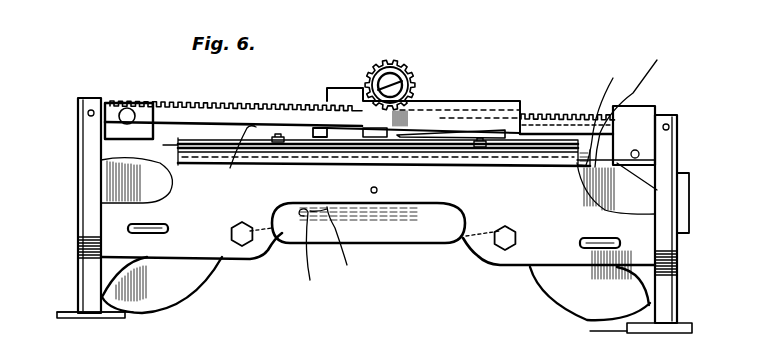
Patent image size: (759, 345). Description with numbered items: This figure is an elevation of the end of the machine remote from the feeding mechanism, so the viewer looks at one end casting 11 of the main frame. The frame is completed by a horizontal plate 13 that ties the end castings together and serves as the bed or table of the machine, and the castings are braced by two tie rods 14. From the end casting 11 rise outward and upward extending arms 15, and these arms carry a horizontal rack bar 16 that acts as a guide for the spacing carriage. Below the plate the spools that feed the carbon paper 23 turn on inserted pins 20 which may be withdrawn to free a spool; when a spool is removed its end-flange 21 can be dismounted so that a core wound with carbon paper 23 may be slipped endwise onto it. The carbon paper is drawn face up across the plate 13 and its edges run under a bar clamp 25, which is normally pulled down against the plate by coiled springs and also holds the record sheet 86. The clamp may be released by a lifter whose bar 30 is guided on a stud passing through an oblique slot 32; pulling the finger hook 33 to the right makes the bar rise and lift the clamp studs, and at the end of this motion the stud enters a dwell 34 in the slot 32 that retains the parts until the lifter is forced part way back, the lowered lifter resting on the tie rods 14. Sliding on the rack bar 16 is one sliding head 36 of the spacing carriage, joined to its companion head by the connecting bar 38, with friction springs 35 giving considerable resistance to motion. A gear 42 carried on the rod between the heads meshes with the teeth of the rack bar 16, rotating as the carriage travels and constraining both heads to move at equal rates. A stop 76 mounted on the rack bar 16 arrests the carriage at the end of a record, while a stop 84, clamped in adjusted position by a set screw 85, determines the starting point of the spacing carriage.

The end casting 11 is at (90, 287).
The horizontal plate 13 is at (461, 155).
The tie rod 14 is at (256, 247).
The arm 15 is at (85, 155).
The rack bar 16 is at (252, 113).
The inserted pin 20 is at (150, 228).
The end-flange 21 is at (378, 276).
The carbon paper 23 is at (641, 108).
The bar clamp 25 is at (235, 158).
The lifter bar 30 is at (400, 228).
The oblique slot 32 is at (334, 246).
The finger hook 33 is at (683, 200).
The dwell 34 is at (310, 255).
The friction spring 35 is at (420, 133).
The sliding head 36 is at (437, 104).
The connecting bar 38 is at (314, 140).
The gear 42 is at (405, 70).
The stop 76 is at (628, 107).
The stop 84 is at (144, 107).
The set screw 85 is at (127, 114).
The record sheet 86 is at (608, 111).